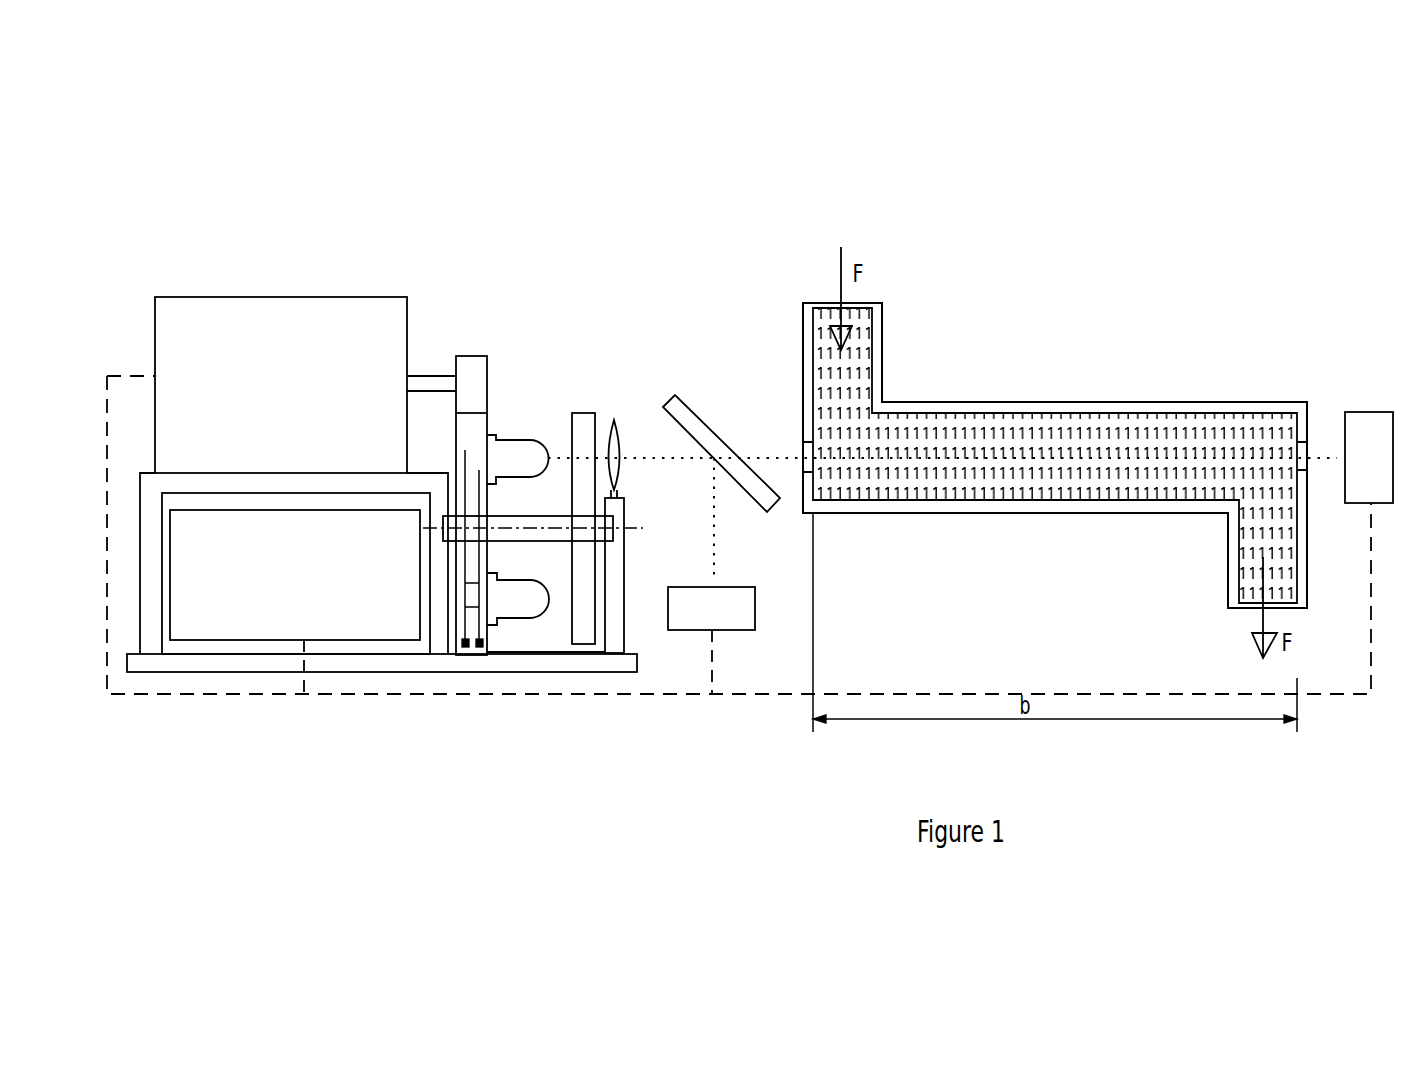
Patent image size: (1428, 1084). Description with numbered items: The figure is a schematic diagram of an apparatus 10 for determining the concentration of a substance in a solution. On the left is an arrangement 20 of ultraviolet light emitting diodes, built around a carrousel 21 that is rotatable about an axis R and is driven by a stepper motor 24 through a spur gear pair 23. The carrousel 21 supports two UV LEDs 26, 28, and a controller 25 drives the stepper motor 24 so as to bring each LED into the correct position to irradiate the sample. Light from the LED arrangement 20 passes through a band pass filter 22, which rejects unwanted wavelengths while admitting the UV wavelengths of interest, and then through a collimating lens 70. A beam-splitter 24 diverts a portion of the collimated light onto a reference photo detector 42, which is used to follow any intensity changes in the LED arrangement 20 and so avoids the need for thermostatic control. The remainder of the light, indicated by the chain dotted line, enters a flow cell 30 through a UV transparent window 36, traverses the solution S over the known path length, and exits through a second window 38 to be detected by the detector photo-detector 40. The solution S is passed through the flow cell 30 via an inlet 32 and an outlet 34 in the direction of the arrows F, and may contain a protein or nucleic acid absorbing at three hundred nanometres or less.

The apparatus 10 is at (1172, 162).
The arrangement of light emitting diodes 20 is at (551, 264).
The carrousel 21 is at (480, 425).
The band pass filter 22 is at (587, 430).
The spur gear pair 23 is at (482, 367).
The beam-splitter / stepper motor 24 is at (222, 327).
The controller 25 is at (245, 607).
The UV LED 26 is at (537, 442).
The UV LED 28 is at (533, 604).
The flow cell 30 is at (1140, 423).
The inlet 32 is at (860, 303).
The outlet 34 is at (1252, 613).
The window 36 is at (803, 452).
The window 38 is at (1308, 448).
The photo-detector 40 is at (1370, 447).
The reference photo detector 42 is at (737, 615).
The collimating lens 70 is at (618, 432).
The axis R is at (643, 530).